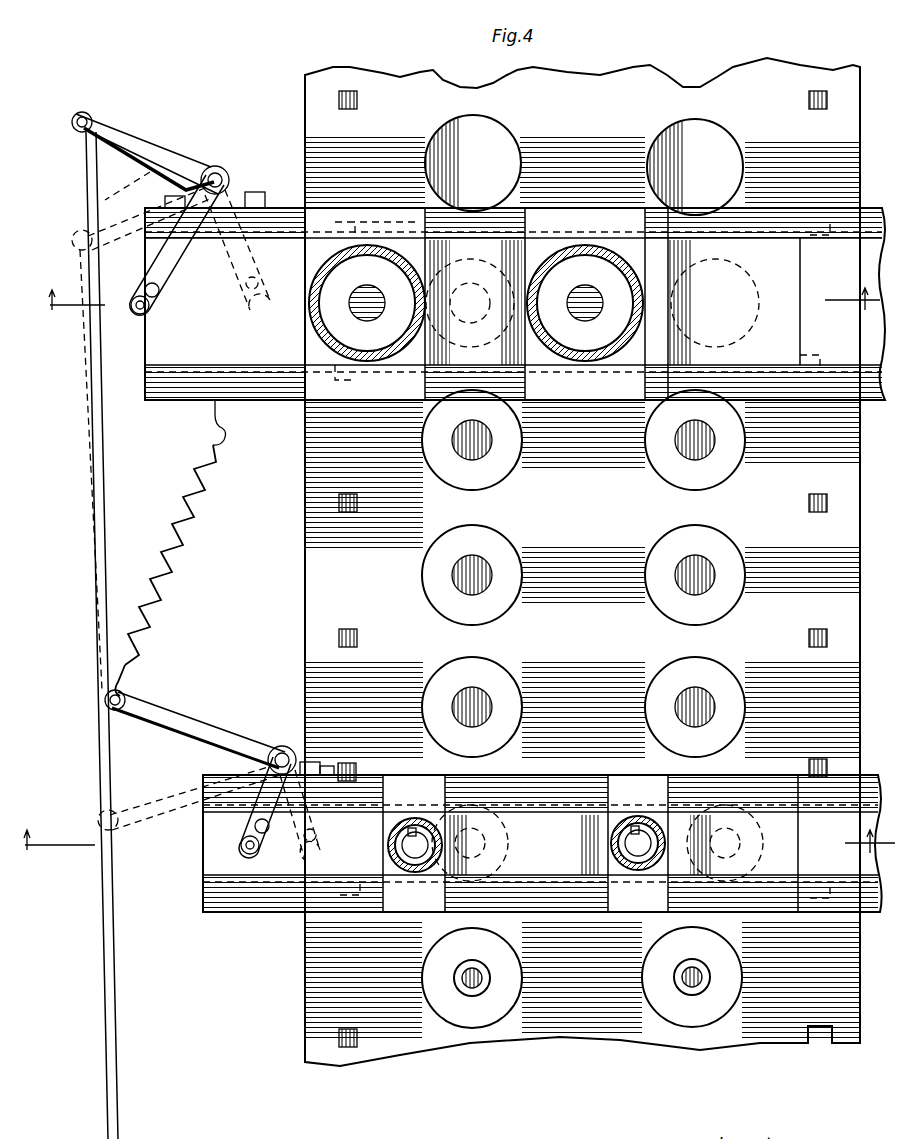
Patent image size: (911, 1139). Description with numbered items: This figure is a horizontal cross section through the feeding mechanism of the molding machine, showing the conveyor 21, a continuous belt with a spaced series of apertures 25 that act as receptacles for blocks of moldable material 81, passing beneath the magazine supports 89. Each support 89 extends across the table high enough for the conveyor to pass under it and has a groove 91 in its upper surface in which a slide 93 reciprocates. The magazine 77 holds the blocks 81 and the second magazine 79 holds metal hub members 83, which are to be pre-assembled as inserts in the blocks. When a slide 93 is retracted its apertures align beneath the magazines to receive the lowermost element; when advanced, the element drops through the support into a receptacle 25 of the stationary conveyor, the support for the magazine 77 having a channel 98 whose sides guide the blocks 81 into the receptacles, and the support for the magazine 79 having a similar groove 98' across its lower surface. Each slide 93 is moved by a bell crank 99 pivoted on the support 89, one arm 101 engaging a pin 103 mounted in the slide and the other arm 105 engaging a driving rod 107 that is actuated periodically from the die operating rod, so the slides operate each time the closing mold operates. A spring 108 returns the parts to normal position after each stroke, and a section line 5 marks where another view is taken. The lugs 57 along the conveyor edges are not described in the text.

The section line 5 is at (459, 570).
The conveyor 21 is at (318, 985).
The apertures 25 is at (480, 122).
The lug 57 is at (352, 512).
The magazine 77 is at (375, 362).
The second magazine 79 is at (413, 873).
The blocks of moldable material 81 is at (540, 242).
The metal hub member 83 is at (413, 830).
The support 89 is at (270, 392).
The groove 91 is at (297, 392).
The slide 93 is at (228, 353).
The channel 98 is at (582, 307).
The groove 98' is at (585, 843).
The bell crank 99 is at (182, 165).
The arm 101 is at (158, 292).
The pin 103 is at (135, 315).
The other arm 105 is at (158, 135).
The driving rod 107 is at (115, 1008).
The spring 108 is at (175, 585).